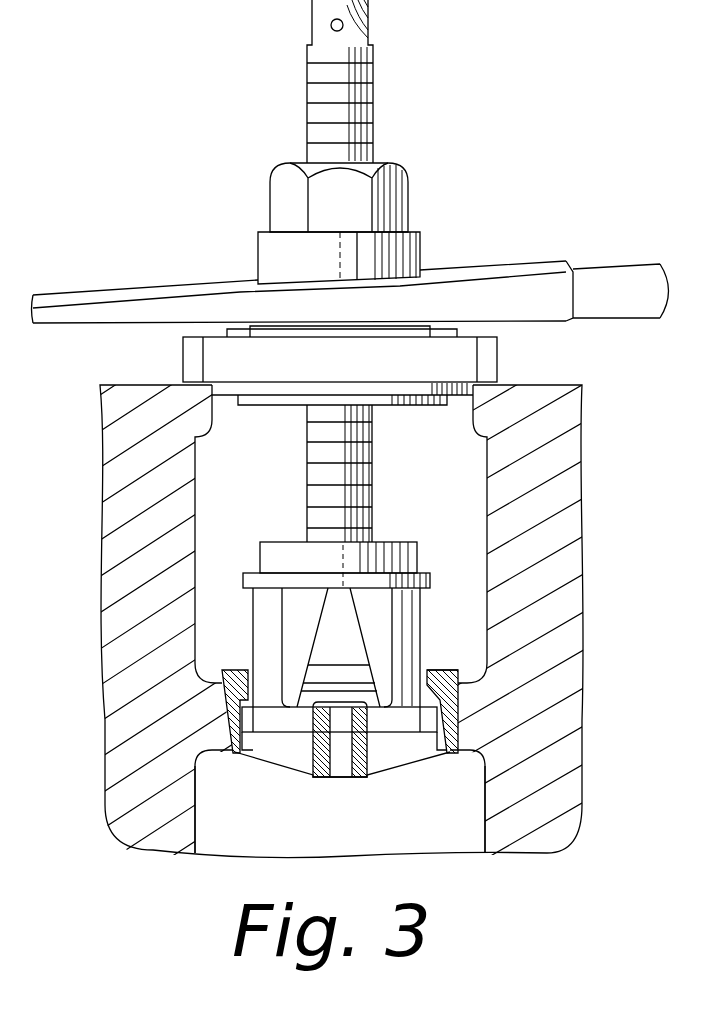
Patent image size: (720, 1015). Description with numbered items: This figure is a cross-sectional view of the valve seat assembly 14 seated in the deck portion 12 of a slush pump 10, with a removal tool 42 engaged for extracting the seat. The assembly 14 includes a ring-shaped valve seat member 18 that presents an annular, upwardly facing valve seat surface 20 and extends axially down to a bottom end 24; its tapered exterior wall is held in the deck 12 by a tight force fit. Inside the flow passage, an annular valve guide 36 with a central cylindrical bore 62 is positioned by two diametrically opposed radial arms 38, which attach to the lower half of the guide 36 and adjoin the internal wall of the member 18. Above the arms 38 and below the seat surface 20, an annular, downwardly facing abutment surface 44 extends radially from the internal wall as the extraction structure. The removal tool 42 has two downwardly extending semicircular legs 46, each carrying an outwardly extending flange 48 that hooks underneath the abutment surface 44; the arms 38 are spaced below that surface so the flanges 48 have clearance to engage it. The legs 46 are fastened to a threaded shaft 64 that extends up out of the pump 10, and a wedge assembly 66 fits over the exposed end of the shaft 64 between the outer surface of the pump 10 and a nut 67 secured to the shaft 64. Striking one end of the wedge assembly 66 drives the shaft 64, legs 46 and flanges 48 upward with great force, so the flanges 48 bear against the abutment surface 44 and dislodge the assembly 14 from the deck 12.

The slush pump 10 is at (588, 552).
The deck portion 12 is at (465, 680).
The valve seat assembly 14 is at (265, 770).
The valve seat member 18 is at (242, 663).
The valve seat surface 20 is at (432, 665).
The bottom end 24 is at (443, 753).
The valve guide 36 is at (308, 760).
The radial arms 38 is at (287, 758).
The removal tool 42 is at (412, 540).
The abutment surface 44 is at (437, 715).
The legs 46 is at (240, 600).
The flanges 48 is at (250, 757).
The cylindrical bore 62 is at (338, 777).
The threaded shaft 64 is at (318, 450).
The wedge assembly 66 is at (478, 262).
The nut 67 is at (397, 176).